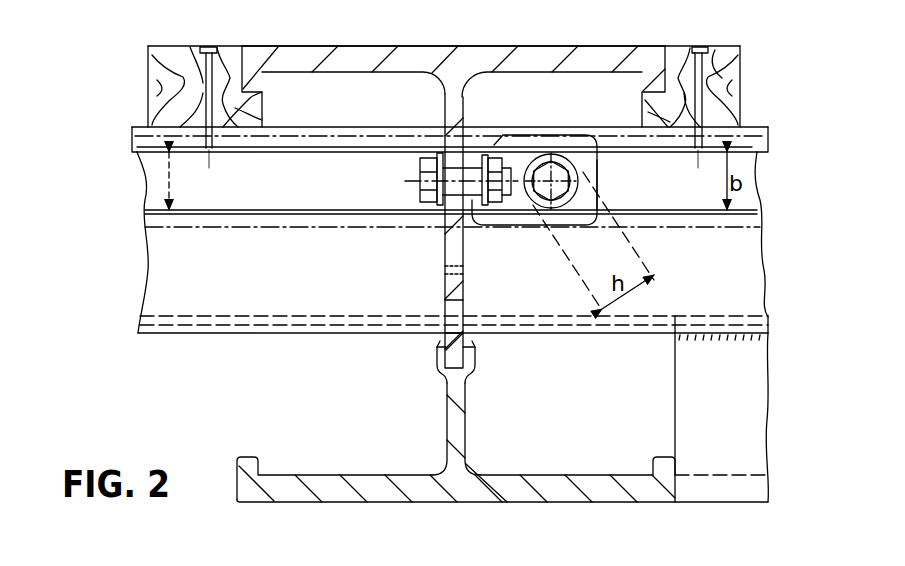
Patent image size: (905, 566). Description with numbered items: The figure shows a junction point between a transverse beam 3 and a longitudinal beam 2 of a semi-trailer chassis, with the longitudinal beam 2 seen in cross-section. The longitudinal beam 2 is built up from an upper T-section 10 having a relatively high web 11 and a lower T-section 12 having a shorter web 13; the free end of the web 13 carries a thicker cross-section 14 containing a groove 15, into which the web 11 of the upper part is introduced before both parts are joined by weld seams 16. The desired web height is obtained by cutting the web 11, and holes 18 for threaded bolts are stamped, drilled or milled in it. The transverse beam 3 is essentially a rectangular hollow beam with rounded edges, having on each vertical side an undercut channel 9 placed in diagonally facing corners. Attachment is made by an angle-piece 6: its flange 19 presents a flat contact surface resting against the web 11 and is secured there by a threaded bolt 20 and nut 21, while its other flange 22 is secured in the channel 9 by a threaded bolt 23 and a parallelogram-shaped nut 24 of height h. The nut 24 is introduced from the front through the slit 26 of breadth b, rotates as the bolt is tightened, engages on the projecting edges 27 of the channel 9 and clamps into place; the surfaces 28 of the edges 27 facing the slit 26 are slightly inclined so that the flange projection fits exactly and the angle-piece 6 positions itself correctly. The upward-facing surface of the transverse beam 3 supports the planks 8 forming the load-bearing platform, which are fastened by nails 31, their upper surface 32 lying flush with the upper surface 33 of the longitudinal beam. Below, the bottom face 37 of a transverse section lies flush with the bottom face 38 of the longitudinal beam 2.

The longitudinal beam 2 is at (502, 438).
The transverse beam 3 is at (283, 345).
The angle-piece 6 is at (498, 229).
The plank 8 is at (162, 60).
The undercut channel 9 is at (153, 193).
The upper T-section 10 is at (493, 55).
The web 11 is at (452, 300).
The lower T-section 12 is at (305, 487).
The web 13 is at (455, 435).
The thicker cross-section 14 is at (438, 368).
The groove 15 is at (465, 370).
The weld seam 16 is at (440, 346).
The hole 18 is at (462, 185).
The flange 19 is at (464, 279).
The threaded bolt 20 is at (420, 180).
The nut 21 is at (488, 172).
The flange 22 is at (590, 165).
The threaded bolt 23 is at (556, 188).
The parallelogram-shaped nut 24 is at (600, 205).
The slit 26 is at (176, 177).
The projecting edge 27 is at (302, 138).
The surface 28 is at (338, 153).
The nail 31 is at (697, 46).
The upper surface 32 is at (227, 46).
The upper surface 33 is at (320, 45).
The bottom face 37 is at (722, 504).
The bottom face 38 is at (505, 500).